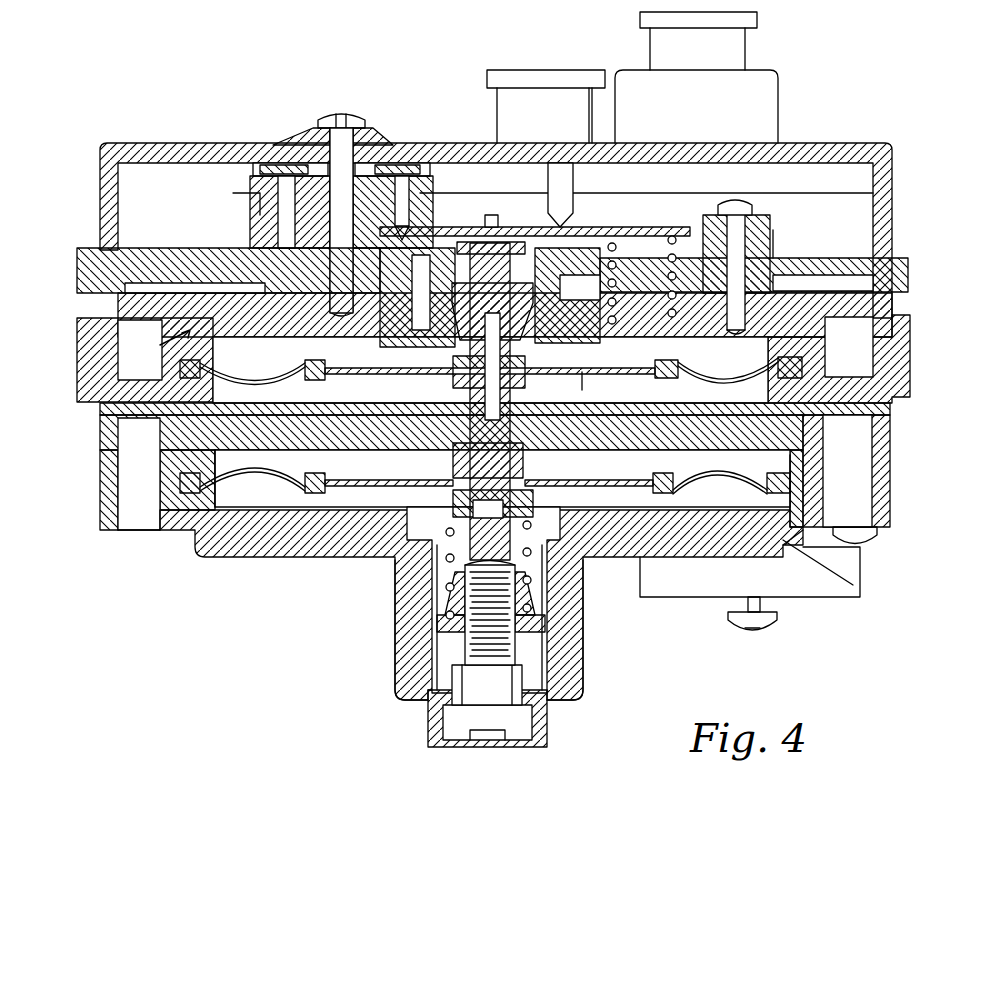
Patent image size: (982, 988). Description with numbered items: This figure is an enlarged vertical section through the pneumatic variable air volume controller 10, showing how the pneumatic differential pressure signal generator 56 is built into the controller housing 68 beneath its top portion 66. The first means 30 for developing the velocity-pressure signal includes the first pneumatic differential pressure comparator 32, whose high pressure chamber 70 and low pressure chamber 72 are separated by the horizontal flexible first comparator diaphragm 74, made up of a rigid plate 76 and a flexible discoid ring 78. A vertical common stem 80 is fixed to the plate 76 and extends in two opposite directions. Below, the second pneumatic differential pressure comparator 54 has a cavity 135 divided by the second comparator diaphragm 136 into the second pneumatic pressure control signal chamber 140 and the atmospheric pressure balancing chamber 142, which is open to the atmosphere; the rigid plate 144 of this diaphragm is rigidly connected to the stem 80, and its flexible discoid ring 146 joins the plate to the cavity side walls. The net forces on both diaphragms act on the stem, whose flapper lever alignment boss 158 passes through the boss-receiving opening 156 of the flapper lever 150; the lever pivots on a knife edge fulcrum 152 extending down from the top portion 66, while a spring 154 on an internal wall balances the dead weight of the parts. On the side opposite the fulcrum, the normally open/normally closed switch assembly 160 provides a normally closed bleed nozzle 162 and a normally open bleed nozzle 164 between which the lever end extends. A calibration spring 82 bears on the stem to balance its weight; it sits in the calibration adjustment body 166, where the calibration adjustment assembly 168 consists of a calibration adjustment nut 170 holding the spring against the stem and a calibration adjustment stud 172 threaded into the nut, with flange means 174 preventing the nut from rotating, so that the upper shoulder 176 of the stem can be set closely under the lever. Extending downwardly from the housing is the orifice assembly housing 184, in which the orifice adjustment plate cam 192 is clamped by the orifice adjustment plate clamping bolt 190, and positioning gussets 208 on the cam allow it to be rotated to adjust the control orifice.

The pneumatic variable air volume controller 10 is at (541, 165).
The first means for developing a first pneumatic pressure control signal 30 is at (915, 345).
The first pneumatic differential pressure comparator 32 is at (103, 400).
The second pneumatic differential pressure comparator 54 is at (897, 462).
The pneumatic differential pressure signal generator 56 is at (430, 495).
The top portion of controller housing 66 is at (886, 162).
The controller housing 68 is at (912, 258).
The high pressure chamber 70 is at (250, 348).
The low pressure chamber 72 is at (247, 397).
The first comparator diaphragm 74 is at (677, 396).
The rigid plate 76 is at (582, 372).
The flexible discoid ring 78 is at (287, 372).
The common stem 80 is at (465, 525).
The calibration spring 82 is at (428, 562).
The cavity 135 is at (820, 597).
The second comparator diaphragm 136 is at (665, 476).
The second pneumatic pressure control signal chamber 140 is at (347, 492).
The atmospheric pressure balancing chamber 142 is at (747, 462).
The rigid plate 144 is at (400, 478).
The flexible discoid ring 146 is at (228, 484).
The flapper lever 150 is at (440, 210).
The knife edge fulcrum 152 is at (620, 274).
The spring 154 is at (676, 230).
The boss-receiving opening 156 is at (540, 240).
The flapper lever alignment boss 158 is at (492, 233).
The normally open/normally closed switch assembly 160 is at (327, 108).
The normally closed bleed nozzle 162 is at (413, 213).
The normally open bleed nozzle 164 is at (430, 265).
The calibration adjustment body 166 is at (567, 642).
The calibration adjustment assembly 168 is at (457, 647).
The calibration adjustment nut 170 is at (523, 640).
The calibration adjustment stud 172 is at (488, 692).
The flange means 174 is at (538, 560).
The upper shoulder 176 is at (518, 232).
The orifice assembly housing 184 is at (850, 580).
The orifice adjustment plate clamping bolt 190 is at (767, 630).
The orifice adjustment plate cam 192 is at (718, 602).
The positioning gussets 208 is at (800, 607).